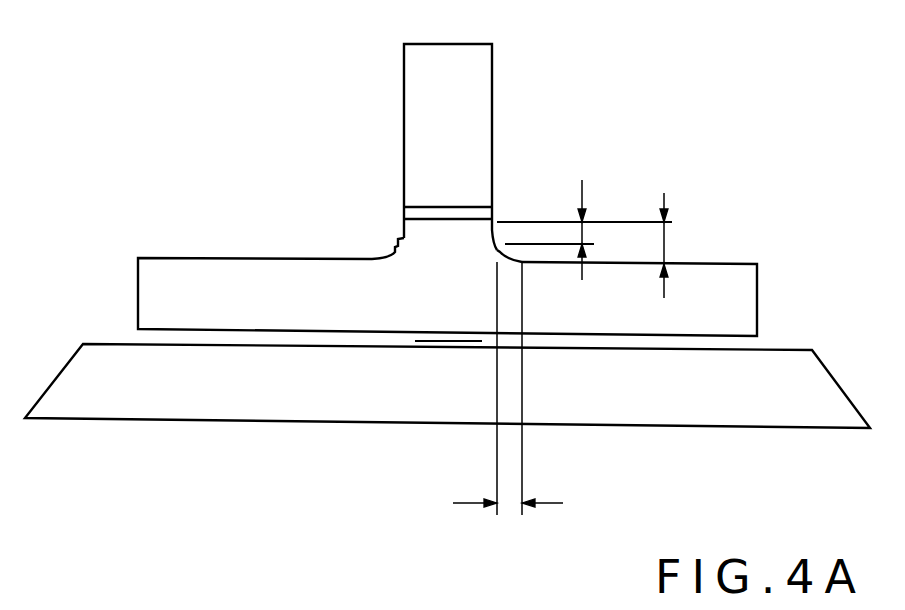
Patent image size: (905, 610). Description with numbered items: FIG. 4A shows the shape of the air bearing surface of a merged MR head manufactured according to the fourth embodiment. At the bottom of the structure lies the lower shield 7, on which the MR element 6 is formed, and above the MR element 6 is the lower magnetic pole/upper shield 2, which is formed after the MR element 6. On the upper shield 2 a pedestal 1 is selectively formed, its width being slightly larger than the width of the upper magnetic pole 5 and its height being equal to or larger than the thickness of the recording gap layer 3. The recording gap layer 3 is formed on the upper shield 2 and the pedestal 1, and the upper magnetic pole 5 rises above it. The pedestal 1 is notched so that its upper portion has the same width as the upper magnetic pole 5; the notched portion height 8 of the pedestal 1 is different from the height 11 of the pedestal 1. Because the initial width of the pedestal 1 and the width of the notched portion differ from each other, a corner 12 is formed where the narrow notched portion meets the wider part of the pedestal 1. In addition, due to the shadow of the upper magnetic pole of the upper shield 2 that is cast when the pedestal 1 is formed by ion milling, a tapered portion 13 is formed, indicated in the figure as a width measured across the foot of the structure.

The pedestal 1 is at (427, 235).
The upper shield 2 is at (287, 277).
The recording gap layer 3 is at (430, 210).
The upper magnetic pole 5 is at (419, 103).
The MR element 6 is at (440, 341).
The lower shield 7 is at (181, 392).
The notched portion height 8 is at (582, 195).
The height of the pedestal 11 is at (664, 247).
The corner 12 is at (498, 246).
The tapered portion 13 is at (563, 503).